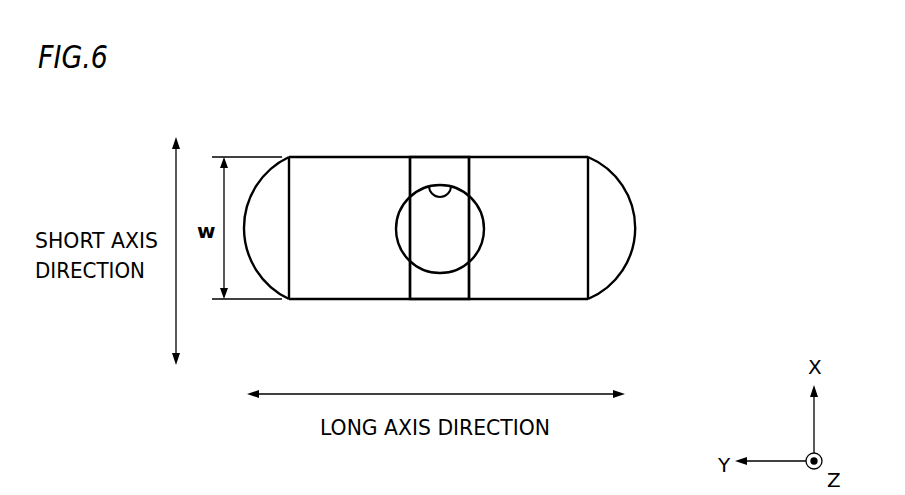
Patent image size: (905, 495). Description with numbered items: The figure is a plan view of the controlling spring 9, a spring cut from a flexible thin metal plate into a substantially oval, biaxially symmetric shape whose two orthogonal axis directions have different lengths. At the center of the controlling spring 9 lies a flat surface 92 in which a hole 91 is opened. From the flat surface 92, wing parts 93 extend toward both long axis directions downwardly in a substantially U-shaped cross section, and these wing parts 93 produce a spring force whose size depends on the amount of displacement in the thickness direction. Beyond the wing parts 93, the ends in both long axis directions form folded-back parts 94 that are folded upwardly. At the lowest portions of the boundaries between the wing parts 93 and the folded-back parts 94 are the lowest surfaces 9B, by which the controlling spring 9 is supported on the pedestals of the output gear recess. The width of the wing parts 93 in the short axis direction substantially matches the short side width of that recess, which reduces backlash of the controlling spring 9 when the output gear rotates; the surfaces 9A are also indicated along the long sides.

The controlling spring 9 is at (650, 125).
The long side surface 9A is at (530, 157).
The lowest surfaces 9B is at (290, 200).
The hole 91 is at (450, 186).
The flat surface 92 is at (443, 299).
The wing parts 93 is at (355, 157).
The folded-back parts 94 is at (620, 223).